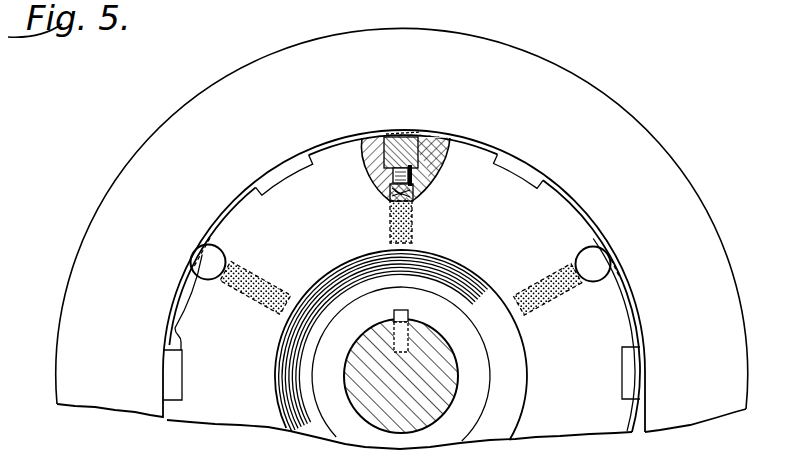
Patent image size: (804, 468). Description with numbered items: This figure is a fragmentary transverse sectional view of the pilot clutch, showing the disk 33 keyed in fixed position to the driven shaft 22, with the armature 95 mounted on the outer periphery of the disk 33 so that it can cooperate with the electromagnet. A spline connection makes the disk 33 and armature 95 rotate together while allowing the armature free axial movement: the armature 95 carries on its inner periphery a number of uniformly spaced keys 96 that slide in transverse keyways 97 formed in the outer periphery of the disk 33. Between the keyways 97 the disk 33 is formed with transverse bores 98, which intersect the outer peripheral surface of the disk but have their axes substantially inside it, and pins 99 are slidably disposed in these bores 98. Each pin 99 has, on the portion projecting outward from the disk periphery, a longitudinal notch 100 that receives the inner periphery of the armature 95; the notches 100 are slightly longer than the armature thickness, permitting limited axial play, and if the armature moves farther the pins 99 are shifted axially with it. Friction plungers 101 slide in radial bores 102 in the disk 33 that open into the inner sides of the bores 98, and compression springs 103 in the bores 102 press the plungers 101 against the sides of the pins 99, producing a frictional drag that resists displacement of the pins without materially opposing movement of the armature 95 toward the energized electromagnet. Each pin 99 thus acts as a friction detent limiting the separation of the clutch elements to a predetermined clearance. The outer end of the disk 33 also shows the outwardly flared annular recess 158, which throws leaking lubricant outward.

The driven shaft 22 is at (370, 408).
The disk 33 is at (245, 400).
The armature 95 is at (127, 157).
The keys 96 is at (279, 178).
The keyways 97 is at (278, 189).
The transverse bores 98 is at (220, 224).
The pins 99 is at (207, 258).
The longitudinal notch 100 is at (400, 133).
The friction plungers 101 is at (393, 178).
The radial bores 102 is at (413, 192).
The compression springs 103 is at (392, 202).
The annular recess 158 is at (292, 357).